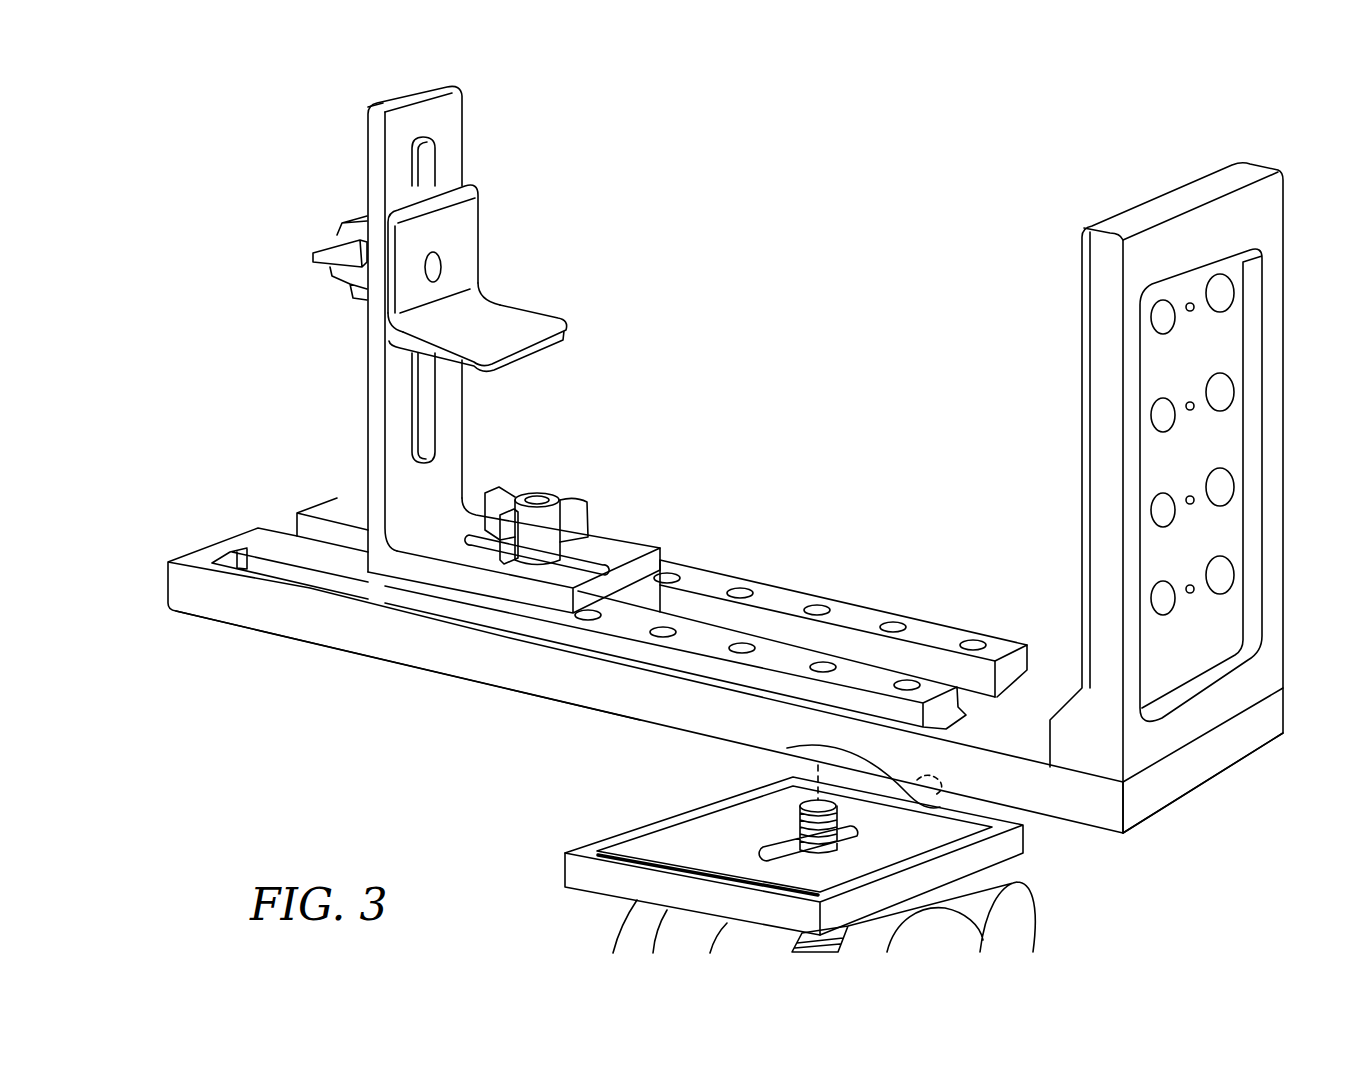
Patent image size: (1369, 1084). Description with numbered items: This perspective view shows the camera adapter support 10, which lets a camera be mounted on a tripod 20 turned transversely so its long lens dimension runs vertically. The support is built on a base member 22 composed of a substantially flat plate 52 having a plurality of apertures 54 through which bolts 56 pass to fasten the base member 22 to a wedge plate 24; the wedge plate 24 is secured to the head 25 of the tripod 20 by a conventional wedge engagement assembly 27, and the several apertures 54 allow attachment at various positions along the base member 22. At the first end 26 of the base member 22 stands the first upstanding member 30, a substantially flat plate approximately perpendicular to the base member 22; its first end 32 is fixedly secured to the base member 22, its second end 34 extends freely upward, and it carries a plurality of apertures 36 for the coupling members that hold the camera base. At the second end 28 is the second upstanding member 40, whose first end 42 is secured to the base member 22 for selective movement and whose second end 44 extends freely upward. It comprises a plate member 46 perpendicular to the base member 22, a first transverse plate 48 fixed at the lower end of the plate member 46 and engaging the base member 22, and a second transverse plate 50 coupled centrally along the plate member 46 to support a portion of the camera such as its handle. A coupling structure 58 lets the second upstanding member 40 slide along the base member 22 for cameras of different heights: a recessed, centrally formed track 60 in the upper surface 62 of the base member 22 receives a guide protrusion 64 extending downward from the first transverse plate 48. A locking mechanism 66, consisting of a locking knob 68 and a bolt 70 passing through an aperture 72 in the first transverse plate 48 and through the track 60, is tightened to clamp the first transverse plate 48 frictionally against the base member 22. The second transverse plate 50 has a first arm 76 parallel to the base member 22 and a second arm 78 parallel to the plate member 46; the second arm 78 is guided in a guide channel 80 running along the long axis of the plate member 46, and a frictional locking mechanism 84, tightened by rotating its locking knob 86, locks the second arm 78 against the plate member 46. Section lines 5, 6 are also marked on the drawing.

The section line 5- 5 is at (523, 268).
The section line 6- 6 is at (752, 524).
The camera adapter support 10 is at (333, 756).
The tripod 20 is at (1062, 912).
The base member 22 is at (237, 623).
The wedge plate 24 is at (650, 848).
The head 25 is at (580, 870).
The first end 26 is at (1205, 806).
The wedge engagement assembly 27 is at (817, 743).
The second end 28 is at (132, 589).
The first upstanding member 30 is at (1176, 183).
The first end 32 is at (1270, 673).
The second end 34 is at (1268, 185).
The apertures 36 is at (1165, 600).
The second upstanding member 40 is at (382, 100).
The first end 42 is at (377, 517).
The second end 44 is at (460, 93).
The plate member 46 is at (445, 120).
The first transverse plate 48 is at (500, 590).
The second transverse plate 50 is at (547, 338).
The flat plate 52 is at (608, 708).
The apertures 54 is at (823, 667).
The bolts 56 is at (800, 812).
The coupling structure 58 is at (660, 548).
The track 60 is at (972, 673).
The upper surface 62 is at (933, 635).
The guide protrusion 64 is at (630, 598).
The locking mechanism 66 is at (574, 468).
The locking knob 68 is at (585, 505).
The bolt 70 is at (533, 477).
The aperture 72 is at (583, 566).
The first arm 76 is at (543, 307).
The second arm 78 is at (470, 210).
The guide channel 80 is at (427, 410).
The frictional locking mechanism 84 is at (441, 267).
The locking knob 86 is at (340, 232).